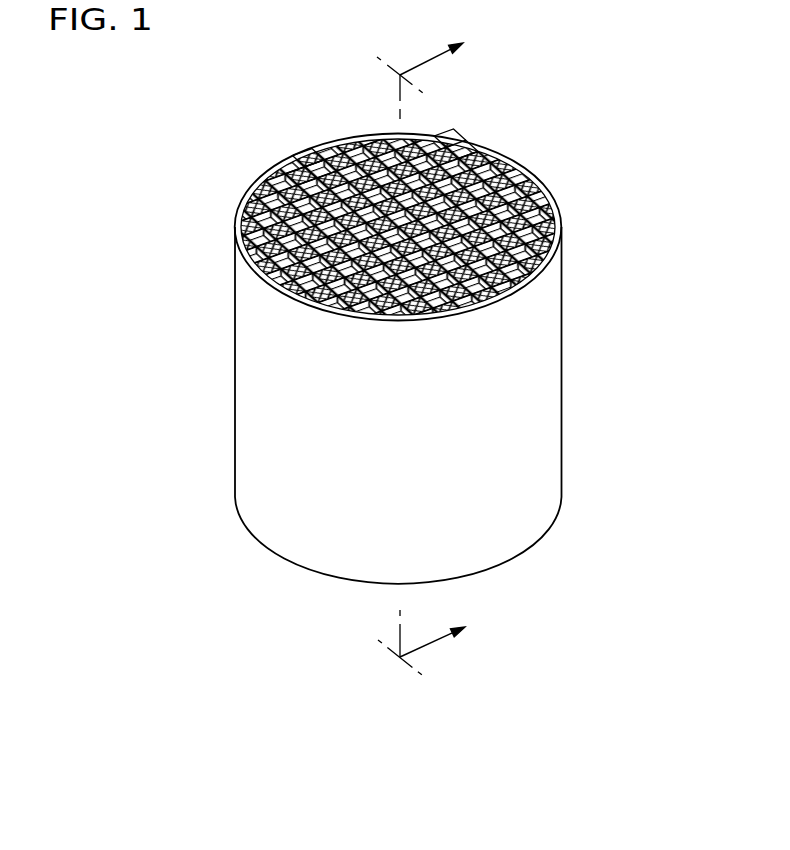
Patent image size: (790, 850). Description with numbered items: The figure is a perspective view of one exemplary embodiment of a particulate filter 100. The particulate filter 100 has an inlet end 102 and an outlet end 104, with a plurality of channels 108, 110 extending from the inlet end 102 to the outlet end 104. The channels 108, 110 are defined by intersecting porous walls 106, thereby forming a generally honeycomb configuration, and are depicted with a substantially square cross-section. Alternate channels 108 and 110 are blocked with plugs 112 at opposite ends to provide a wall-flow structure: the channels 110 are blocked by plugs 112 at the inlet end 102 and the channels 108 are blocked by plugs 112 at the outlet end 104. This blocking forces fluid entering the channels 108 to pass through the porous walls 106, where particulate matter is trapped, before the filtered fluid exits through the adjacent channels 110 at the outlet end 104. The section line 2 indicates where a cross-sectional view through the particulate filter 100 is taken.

The particulate filter 100 is at (571, 109).
The inlet end 102 is at (540, 177).
The outlet end 104 is at (478, 572).
The porous walls 106 is at (472, 148).
The channels 108 is at (315, 162).
The channels 110 is at (297, 180).
The plugs 112 is at (323, 170).
The line 2- 2 is at (421, 368).